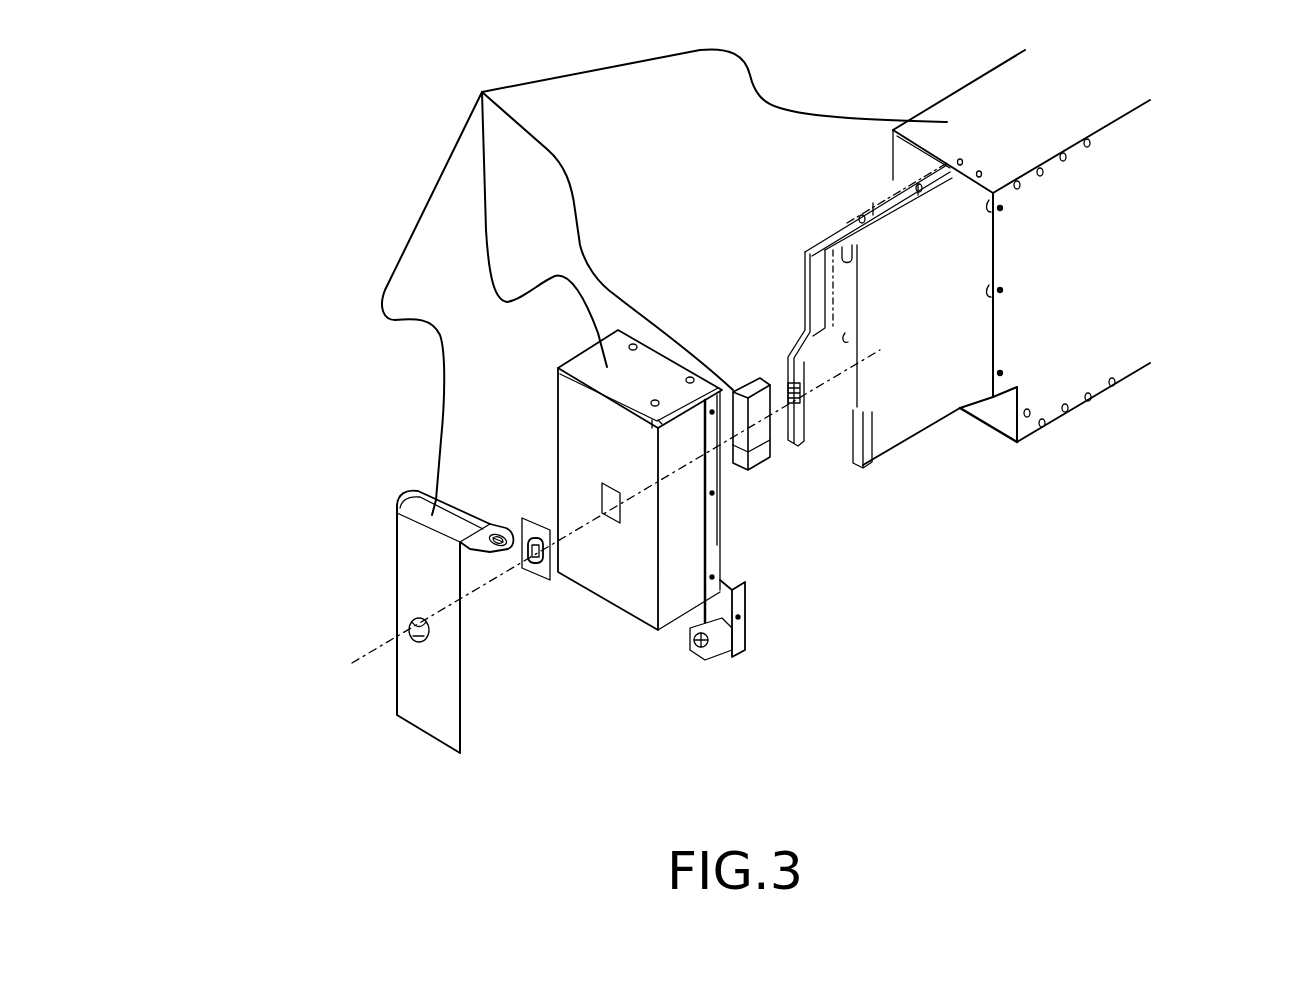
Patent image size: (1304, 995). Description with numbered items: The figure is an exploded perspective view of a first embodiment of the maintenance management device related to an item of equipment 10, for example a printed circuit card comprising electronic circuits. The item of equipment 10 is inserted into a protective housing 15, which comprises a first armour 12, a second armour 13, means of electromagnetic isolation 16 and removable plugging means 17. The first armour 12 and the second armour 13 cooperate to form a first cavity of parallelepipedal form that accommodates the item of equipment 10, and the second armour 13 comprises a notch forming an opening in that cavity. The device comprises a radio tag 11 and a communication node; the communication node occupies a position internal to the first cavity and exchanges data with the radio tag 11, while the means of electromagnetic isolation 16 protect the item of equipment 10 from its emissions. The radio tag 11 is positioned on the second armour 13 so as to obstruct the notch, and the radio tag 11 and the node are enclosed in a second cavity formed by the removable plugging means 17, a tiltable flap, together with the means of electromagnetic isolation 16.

The equipment EQ1 10 is at (942, 362).
The fastening element ET1 11 is at (540, 570).
The first armour 12 is at (775, 383).
The second armour 13 is at (687, 590).
The base plate BP1 15 is at (654, 282).
The means of electromagnetic isolation 16 is at (760, 435).
The removable plugging means 17 is at (415, 586).